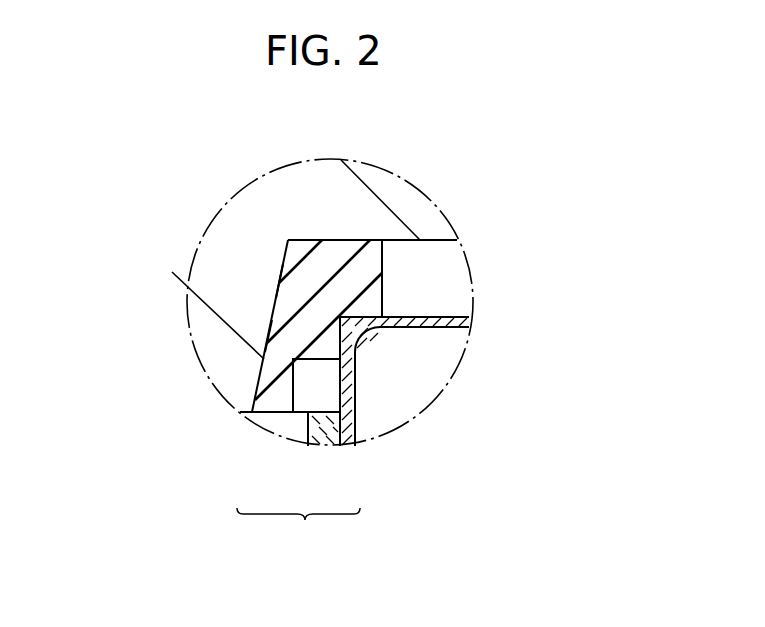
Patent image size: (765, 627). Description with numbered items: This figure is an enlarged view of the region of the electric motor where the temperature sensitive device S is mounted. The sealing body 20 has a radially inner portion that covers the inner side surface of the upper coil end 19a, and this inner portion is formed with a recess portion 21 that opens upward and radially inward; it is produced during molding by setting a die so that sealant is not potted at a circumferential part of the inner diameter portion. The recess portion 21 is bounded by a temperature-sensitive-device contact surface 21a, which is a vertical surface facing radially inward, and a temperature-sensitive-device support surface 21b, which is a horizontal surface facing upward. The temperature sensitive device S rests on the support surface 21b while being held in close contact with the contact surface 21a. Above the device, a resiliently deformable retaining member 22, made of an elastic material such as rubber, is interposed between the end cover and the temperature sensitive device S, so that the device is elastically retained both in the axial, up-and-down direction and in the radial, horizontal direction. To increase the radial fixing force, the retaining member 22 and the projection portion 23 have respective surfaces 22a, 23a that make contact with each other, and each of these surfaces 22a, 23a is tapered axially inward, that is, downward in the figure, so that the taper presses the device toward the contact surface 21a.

The upper coil end 19a is at (412, 395).
The sealing body 20 is at (422, 317).
The recess portion 21 is at (298, 531).
The temperature-sensitive-device contact surface 21a is at (345, 390).
The temperature-sensitive-device support surface 21b is at (320, 412).
The retaining member 22 is at (343, 245).
The surface of retaining member 22a is at (277, 293).
The projection portion 23 is at (218, 353).
The surface of projection portion 23a is at (269, 330).
The temperature sensitive device S is at (320, 358).